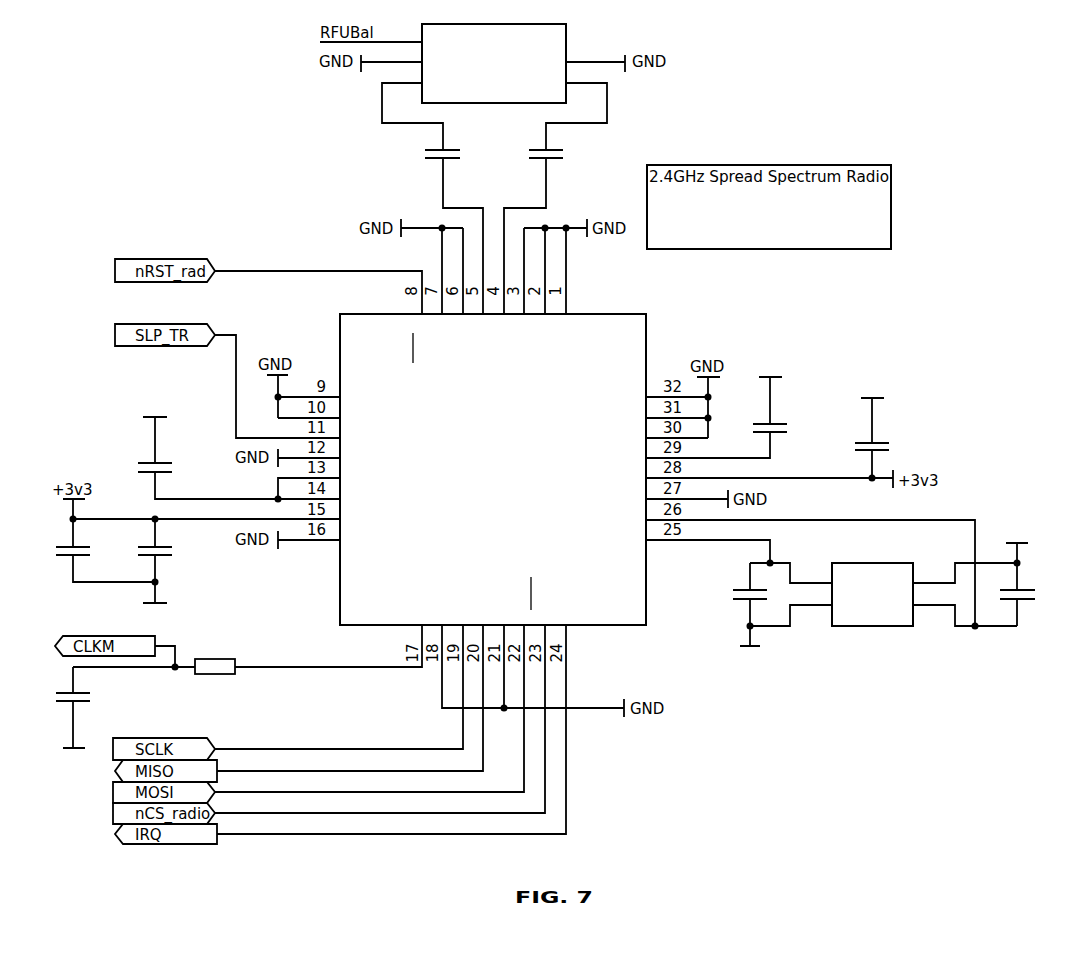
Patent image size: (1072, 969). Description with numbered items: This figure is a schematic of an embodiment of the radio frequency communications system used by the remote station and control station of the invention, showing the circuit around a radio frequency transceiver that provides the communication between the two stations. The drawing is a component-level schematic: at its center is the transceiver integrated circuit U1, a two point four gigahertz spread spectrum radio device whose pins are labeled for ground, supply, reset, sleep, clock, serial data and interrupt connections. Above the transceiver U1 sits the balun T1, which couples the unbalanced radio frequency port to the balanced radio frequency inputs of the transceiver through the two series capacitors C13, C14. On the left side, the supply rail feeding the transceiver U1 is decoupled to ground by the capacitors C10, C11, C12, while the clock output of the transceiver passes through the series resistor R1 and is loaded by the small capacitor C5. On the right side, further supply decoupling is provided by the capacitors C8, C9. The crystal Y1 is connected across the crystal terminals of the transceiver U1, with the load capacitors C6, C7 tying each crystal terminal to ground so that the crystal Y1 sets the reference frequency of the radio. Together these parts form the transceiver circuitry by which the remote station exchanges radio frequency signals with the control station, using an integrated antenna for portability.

The RF balun transformer 748421245 T1 is at (495, 71).
The 8p NPO capacitor C13 is at (470, 231).
The 8p NPO capacitor C14 is at (561, 231).
The AT86RF230 2.4GHz radio transceiver U1 is at (548, 459).
The 1uF X7R capacitor C10 is at (238, 449).
The 1uF X7R capacitor C11 is at (177, 572).
The 10uF X7R capacitor C12 is at (96, 571).
The 470 ohm resistor R1 is at (308, 670).
The 0p56 NPO capacitor C5 is at (111, 719).
The 1uF X7R capacitor C8 is at (748, 408).
The 1uF X7R capacitor C9 is at (904, 428).
The 10p NPO capacitor C6 is at (728, 615).
The NX3225SA 16 MHz crystal Y1 is at (892, 595).
The crystal load capacitor C7 is at (1018, 575).